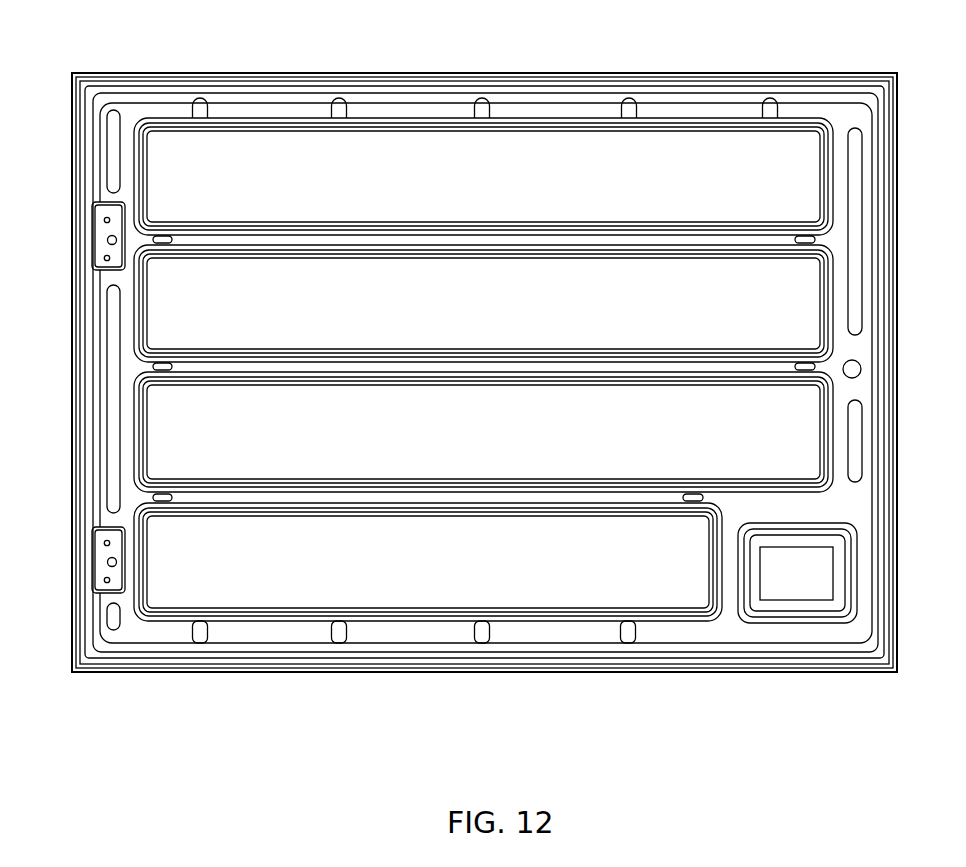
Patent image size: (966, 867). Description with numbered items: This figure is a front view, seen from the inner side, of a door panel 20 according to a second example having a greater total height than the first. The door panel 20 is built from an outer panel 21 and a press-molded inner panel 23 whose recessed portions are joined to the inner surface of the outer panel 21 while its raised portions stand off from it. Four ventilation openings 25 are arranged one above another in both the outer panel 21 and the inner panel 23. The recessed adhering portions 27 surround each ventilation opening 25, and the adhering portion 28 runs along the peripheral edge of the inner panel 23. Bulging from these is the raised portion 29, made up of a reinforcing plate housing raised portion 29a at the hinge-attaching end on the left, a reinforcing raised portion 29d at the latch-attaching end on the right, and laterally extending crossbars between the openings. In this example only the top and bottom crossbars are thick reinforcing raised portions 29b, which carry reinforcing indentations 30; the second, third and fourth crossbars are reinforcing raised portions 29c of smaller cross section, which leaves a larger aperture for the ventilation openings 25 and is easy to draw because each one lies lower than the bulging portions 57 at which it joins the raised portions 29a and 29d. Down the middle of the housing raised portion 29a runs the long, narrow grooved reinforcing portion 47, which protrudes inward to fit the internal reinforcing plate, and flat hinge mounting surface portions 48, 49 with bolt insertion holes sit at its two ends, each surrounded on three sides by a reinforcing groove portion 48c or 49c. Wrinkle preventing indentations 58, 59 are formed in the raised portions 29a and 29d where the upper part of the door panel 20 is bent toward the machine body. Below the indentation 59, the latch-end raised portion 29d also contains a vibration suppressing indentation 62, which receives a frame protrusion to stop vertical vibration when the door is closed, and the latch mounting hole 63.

The door panel 20 is at (843, 72).
The outer panel 21 is at (873, 75).
The inner panel 23 is at (873, 105).
The ventilation openings 25 is at (405, 147).
The adhering portions 27 is at (445, 130).
The adhering portion 28 is at (480, 84).
The raised portion 29 is at (520, 95).
The reinforcing plate housing raised portion 29a is at (87, 375).
The reinforcing raised portions 29b is at (560, 113).
The reinforcing raised portions 29c is at (518, 242).
The reinforcing raised portion 29d is at (862, 347).
The reinforcing indentations 30 is at (627, 108).
The grooved reinforcing portion 47 is at (108, 338).
The hinge mounting surface portion 48 is at (95, 245).
The reinforcing groove portion 48c is at (107, 271).
The hinge mounting surface portion 49 is at (95, 566).
The reinforcing groove portion 49c is at (107, 594).
The bulging portions 57 is at (153, 241).
The wrinkle preventing indentation 58 is at (112, 147).
The wrinkle preventing indentation 59 is at (857, 140).
The vibration suppressing indentation 62 is at (855, 370).
The latch mounting hole 63 is at (848, 557).